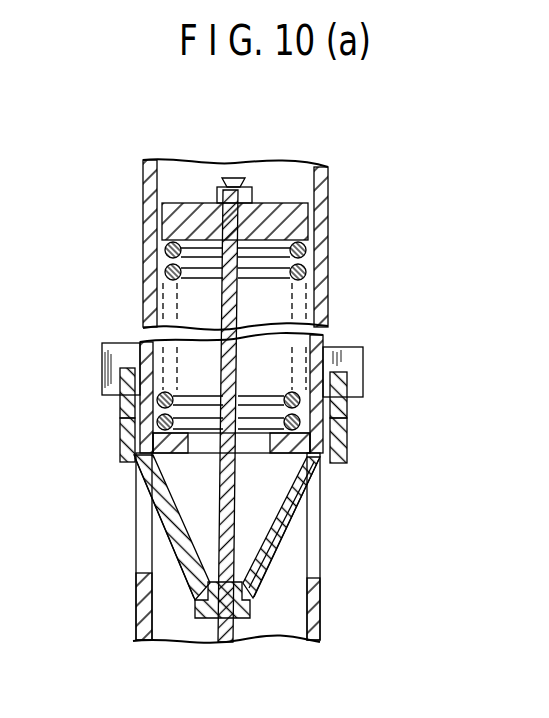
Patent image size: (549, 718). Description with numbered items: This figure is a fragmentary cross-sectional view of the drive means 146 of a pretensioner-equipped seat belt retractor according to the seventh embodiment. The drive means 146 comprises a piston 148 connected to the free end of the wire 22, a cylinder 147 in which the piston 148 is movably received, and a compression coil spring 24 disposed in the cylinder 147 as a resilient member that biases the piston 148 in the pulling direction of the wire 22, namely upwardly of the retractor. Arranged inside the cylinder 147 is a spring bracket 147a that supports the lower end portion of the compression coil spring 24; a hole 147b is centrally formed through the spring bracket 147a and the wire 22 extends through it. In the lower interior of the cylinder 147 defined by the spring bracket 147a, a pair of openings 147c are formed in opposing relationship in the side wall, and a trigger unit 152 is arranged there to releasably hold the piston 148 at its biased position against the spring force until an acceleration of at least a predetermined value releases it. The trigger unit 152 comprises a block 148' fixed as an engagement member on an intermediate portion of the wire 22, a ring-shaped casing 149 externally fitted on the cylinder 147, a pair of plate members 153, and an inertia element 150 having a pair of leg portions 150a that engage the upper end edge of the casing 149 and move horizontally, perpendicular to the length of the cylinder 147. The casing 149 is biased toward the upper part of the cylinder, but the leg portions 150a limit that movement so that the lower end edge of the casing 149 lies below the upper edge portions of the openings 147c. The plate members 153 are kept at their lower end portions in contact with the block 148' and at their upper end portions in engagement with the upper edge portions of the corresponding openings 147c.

The drive means 146 is at (394, 242).
The cylinder 147 is at (320, 293).
The piston 148 is at (245, 176).
The compression coil spring 24 is at (200, 273).
The wire 22 is at (236, 482).
The inertia element 150 is at (367, 353).
The leg portions 150a is at (347, 382).
The ring-shaped casing 149 is at (343, 435).
The trigger unit 152 is at (348, 473).
The spring bracket 147a is at (210, 452).
The hole 147b is at (173, 455).
The openings 147c is at (313, 535).
The plate members 153 is at (177, 548).
The block 148' is at (259, 639).